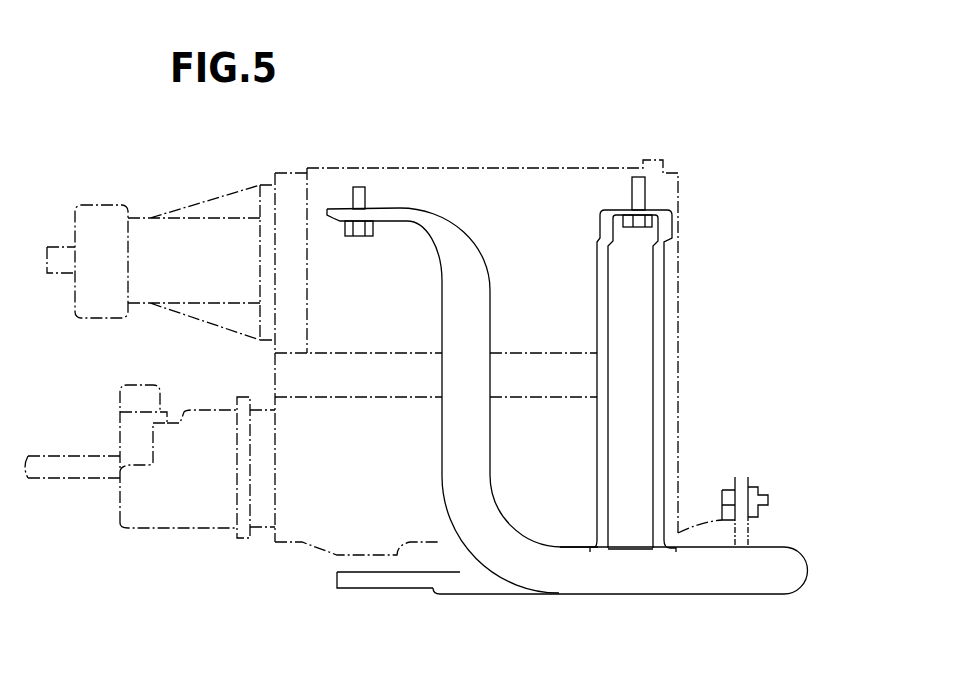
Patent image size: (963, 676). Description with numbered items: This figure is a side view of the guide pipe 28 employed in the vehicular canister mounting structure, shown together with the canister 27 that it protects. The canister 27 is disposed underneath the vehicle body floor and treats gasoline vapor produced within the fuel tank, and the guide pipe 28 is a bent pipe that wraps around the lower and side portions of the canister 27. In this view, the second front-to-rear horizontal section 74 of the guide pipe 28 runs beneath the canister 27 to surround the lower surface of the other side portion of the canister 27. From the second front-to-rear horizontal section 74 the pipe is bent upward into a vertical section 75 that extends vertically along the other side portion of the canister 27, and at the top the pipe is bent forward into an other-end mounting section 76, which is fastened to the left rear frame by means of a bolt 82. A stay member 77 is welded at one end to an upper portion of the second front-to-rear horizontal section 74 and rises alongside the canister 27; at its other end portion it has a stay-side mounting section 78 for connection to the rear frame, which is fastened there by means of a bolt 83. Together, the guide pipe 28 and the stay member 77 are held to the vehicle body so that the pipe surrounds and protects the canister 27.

The vehicular canister 27 is at (497, 168).
The guide pipe 28 is at (409, 153).
The second front-to-rear horizontal section 74 is at (765, 547).
The vertical section 75 is at (452, 375).
The other-end mounting section 76 is at (375, 206).
The stay member 77 is at (621, 324).
The stay-side mounting section 78 is at (658, 207).
The bolt 82 is at (368, 153).
The bolt 83 is at (638, 167).